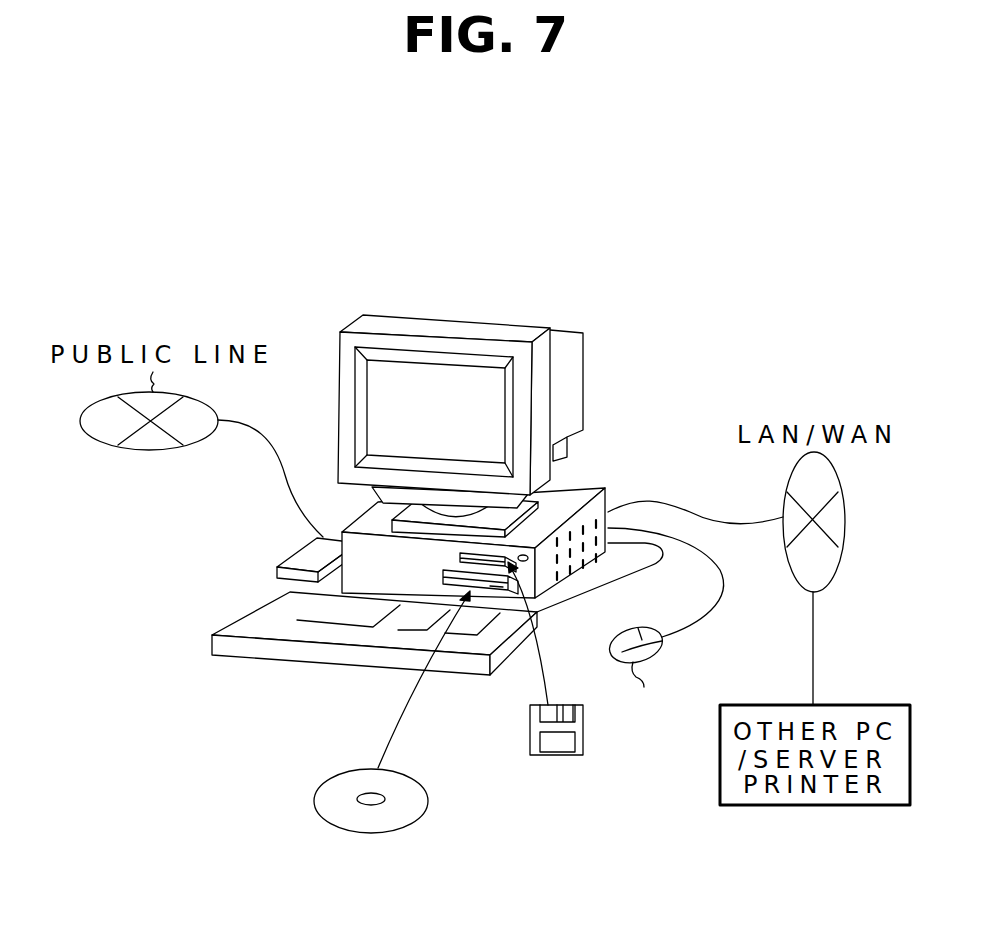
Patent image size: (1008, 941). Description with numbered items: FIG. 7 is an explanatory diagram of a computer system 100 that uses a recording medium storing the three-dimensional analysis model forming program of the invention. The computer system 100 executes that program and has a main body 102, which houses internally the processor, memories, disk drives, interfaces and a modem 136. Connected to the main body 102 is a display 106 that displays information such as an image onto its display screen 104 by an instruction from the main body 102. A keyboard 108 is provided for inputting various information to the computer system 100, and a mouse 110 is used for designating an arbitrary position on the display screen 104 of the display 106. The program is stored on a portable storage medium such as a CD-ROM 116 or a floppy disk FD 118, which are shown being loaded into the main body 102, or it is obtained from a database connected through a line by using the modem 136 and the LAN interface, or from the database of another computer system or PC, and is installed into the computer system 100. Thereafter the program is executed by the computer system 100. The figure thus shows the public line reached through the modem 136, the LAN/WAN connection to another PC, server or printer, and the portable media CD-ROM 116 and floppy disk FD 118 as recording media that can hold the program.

The computer system 100 is at (484, 287).
The main body 102 is at (590, 482).
The display screen 104 is at (473, 392).
The display 106 is at (395, 325).
The keyboard 108 is at (267, 628).
The mouse 110 is at (665, 623).
The CD-ROM 116 is at (360, 833).
The floppy disk FD 118 is at (560, 757).
The modem 136 is at (282, 560).